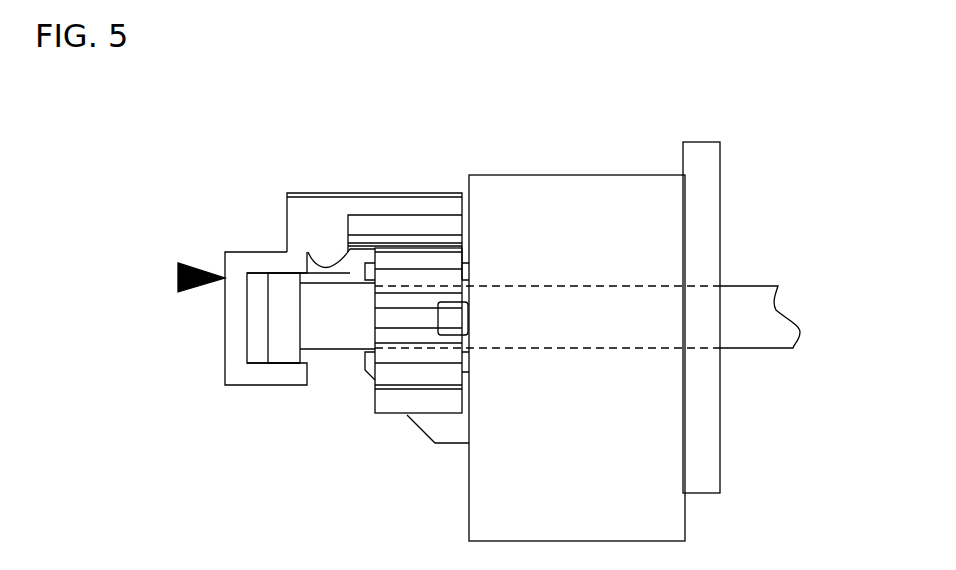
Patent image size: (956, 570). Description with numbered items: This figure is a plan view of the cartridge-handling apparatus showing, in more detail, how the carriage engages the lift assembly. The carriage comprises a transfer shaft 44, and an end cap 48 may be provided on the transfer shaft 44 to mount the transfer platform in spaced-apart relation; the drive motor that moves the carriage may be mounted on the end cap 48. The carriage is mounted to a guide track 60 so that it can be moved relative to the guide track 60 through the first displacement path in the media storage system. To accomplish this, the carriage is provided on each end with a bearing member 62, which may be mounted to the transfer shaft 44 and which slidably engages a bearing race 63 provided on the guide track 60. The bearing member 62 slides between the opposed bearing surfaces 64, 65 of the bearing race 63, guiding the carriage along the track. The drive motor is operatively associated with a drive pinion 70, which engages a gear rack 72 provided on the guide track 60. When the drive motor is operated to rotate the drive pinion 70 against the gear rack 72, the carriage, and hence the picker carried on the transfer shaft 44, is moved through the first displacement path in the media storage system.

The transfer shaft 44 is at (742, 285).
The end cap 48 is at (583, 173).
The guide track 60 is at (178, 277).
The bearing member 62 is at (268, 322).
The bearing race 63 is at (225, 357).
The bearing surface 64 is at (268, 278).
The bearing surface 65 is at (262, 358).
The drive pinion 70 is at (375, 400).
The gear rack 72 is at (312, 253).